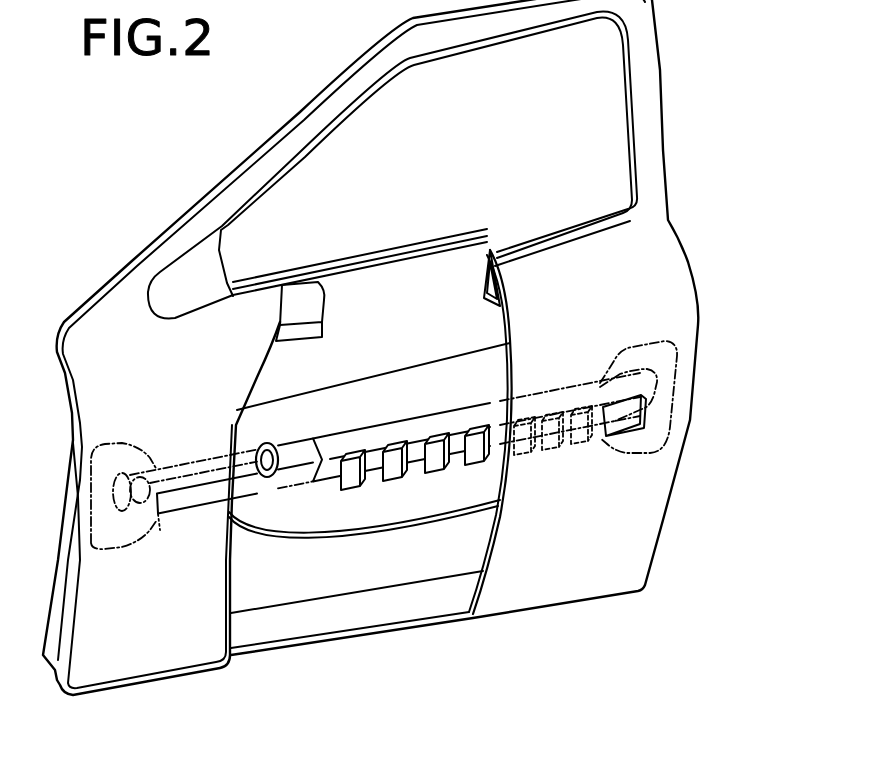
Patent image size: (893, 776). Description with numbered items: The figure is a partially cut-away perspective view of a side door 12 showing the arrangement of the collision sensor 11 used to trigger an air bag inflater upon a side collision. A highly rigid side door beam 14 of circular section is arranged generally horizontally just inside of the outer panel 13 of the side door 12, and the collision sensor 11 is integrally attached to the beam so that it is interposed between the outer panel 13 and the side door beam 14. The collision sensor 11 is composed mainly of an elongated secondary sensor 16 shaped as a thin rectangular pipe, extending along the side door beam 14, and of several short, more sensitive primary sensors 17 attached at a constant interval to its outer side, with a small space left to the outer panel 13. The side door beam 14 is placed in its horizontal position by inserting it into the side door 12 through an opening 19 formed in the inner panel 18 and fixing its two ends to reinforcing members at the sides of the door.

The collision sensor 11 is at (376, 436).
The side door 12 is at (681, 162).
The outer panel 13 is at (540, 583).
The side door beam 14 is at (287, 444).
The secondary sensor 16 is at (362, 455).
The primary sensors 17 is at (443, 442).
The inner panel 18 is at (367, 552).
The opening 19 is at (295, 518).